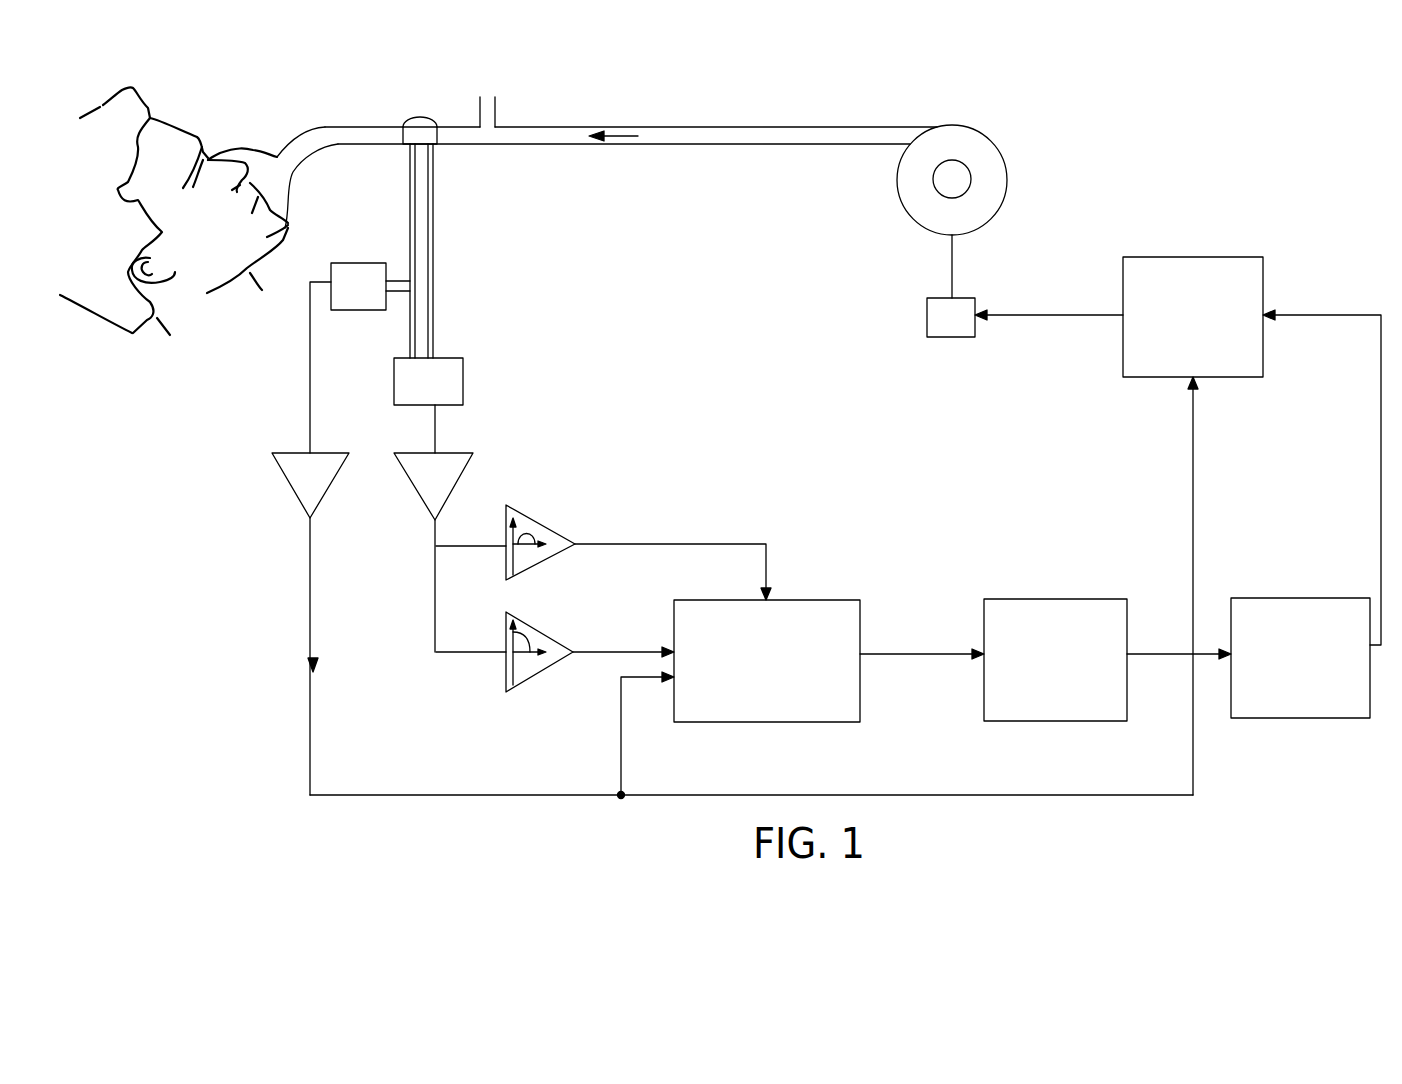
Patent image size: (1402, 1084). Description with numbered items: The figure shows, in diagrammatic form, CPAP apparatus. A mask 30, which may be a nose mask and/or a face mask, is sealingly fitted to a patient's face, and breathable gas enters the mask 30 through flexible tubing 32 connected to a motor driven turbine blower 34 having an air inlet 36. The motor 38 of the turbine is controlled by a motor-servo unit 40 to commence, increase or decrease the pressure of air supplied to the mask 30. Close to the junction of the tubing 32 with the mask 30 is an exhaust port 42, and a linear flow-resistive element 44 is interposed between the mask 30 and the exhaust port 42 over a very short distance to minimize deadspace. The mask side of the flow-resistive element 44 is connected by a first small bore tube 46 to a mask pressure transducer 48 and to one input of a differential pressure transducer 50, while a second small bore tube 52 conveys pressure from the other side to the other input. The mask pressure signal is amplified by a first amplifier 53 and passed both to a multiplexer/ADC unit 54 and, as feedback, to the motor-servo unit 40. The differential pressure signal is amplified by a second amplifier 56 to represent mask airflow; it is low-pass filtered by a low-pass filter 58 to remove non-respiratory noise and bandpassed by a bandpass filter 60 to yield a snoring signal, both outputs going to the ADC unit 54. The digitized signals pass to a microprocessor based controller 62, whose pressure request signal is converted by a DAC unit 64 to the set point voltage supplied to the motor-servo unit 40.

The mask 30 is at (247, 148).
The flexible tubing 32 is at (752, 135).
The motor driven turbine blower 34 is at (1003, 156).
The air inlet 36 is at (970, 187).
The motor 38 is at (963, 298).
The motor-servo unit 40 is at (1213, 257).
The exhaust port 42 is at (597, 127).
The linear flow-resistive element 44 is at (420, 121).
The first small bore tube 46 is at (412, 232).
The mask pressure transducer 48 is at (372, 310).
The differential pressure transducer 50 is at (463, 380).
The second small bore tube 52 is at (435, 298).
The first amplifier 53 is at (302, 453).
The multiplexer/ADC unit 54 is at (792, 600).
The second amplifier 56 is at (455, 482).
The low-pass filter 58 is at (558, 640).
The bandpass filter 60 is at (563, 530).
The controller 62 is at (1020, 599).
The DAC unit 64 is at (1270, 598).